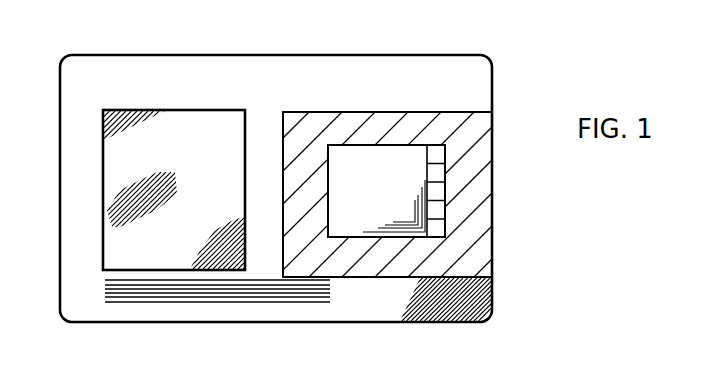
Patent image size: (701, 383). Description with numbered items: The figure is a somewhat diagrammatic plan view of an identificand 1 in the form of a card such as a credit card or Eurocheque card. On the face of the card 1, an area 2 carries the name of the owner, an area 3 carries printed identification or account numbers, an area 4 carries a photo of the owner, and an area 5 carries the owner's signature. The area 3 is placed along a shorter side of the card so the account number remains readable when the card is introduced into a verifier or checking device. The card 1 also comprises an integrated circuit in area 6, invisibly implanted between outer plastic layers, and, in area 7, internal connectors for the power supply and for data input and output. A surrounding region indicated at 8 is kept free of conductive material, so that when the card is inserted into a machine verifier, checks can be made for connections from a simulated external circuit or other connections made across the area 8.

The identificand 1 is at (68, 62).
The area for the name of the owner 2 is at (217, 75).
The area for identification or account numbers 3 is at (70, 150).
The area for the photo of the owner 4 is at (145, 255).
The area for the signature of the owner 5 is at (232, 297).
The integrated circuit area 6 is at (373, 227).
The area of internal connectors 7 is at (440, 195).
The area free of conductive material 8 is at (483, 140).